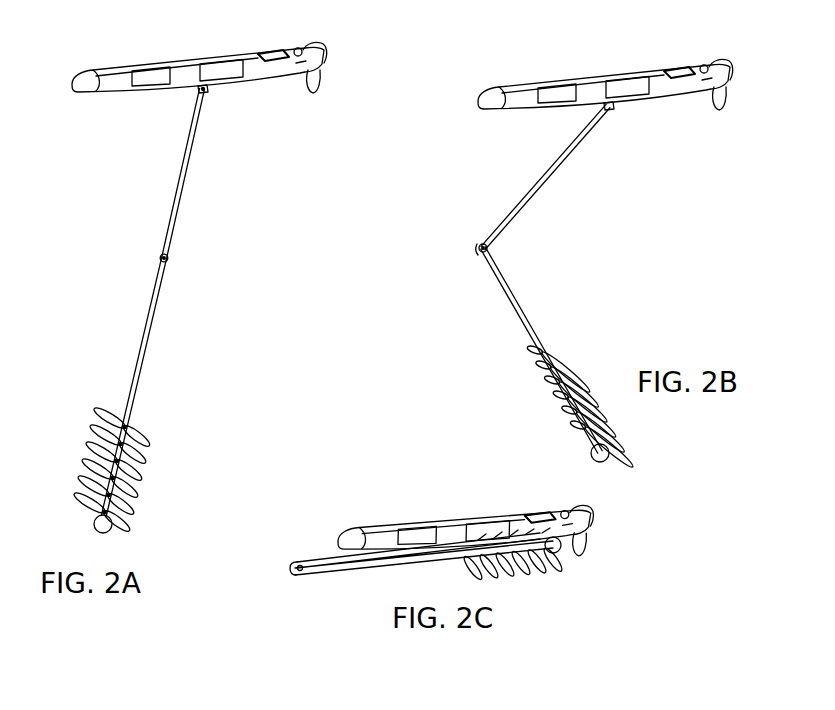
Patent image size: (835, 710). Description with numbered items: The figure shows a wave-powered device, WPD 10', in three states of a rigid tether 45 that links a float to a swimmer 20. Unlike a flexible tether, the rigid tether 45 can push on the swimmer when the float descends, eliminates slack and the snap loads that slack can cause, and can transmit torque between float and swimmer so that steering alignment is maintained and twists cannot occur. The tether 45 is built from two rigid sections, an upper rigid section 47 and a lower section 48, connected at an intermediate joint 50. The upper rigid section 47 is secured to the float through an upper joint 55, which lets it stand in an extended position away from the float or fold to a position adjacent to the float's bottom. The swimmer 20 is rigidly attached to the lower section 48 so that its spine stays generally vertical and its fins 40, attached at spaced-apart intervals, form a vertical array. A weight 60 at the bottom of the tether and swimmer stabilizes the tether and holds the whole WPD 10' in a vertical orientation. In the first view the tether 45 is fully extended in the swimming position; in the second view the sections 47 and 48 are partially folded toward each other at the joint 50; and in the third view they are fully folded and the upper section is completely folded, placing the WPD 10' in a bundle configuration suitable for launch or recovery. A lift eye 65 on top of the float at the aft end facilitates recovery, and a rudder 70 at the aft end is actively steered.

In FIG. 2A, the WPD 10' is at (192, 285).
In FIG. 2C, the WPD 10' is at (433, 557).
In FIG. 2A, the swimmer 20 is at (205, 407).
In FIG. 2A, the fins 40 is at (160, 480).
In FIG. 2A, the tether 45 is at (127, 268).
In FIG. 2A, the upper rigid section 47 is at (184, 191).
In FIG. 2A, the lower section 48 is at (148, 362).
In FIG. 2A, the intermediate joint 50 is at (172, 259).
In FIG. 2A, the upper joint 55 is at (207, 93).
In FIG. 2A, the weight 60 is at (94, 531).
In FIG. 2A, the lift eye 65 is at (324, 46).
In FIG. 2A, the rudder 70 is at (325, 80).